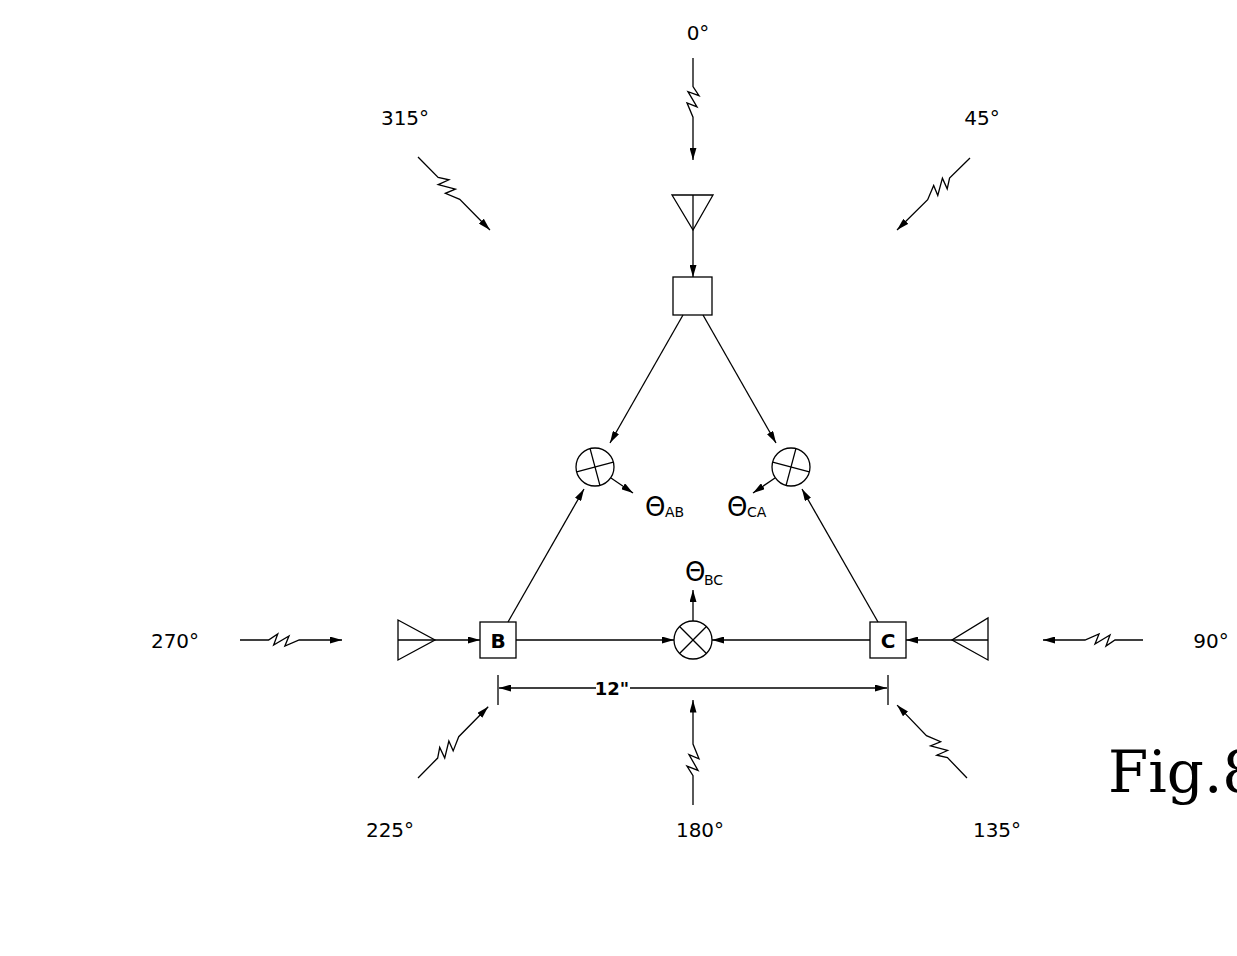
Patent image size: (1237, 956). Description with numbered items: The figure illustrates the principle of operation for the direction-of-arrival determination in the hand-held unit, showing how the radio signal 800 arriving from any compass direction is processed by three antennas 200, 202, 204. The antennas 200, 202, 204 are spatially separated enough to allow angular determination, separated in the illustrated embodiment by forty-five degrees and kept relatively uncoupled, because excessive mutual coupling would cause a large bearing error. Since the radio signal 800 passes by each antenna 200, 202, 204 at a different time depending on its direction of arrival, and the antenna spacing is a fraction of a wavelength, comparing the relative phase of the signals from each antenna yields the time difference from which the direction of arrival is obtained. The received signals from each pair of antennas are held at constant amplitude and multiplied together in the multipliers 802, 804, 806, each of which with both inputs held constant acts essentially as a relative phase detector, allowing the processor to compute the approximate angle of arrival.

The antenna 200 is at (712, 295).
The antenna 202 is at (422, 630).
The antenna 204 is at (966, 630).
The radio signal 800 is at (695, 78).
The multiplier 802 is at (578, 458).
The multiplier 804 is at (704, 656).
The multiplier 806 is at (810, 475).